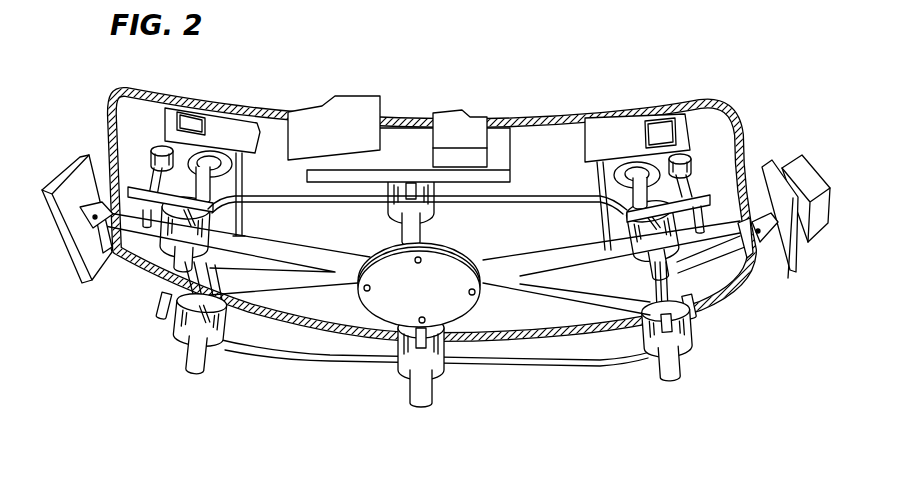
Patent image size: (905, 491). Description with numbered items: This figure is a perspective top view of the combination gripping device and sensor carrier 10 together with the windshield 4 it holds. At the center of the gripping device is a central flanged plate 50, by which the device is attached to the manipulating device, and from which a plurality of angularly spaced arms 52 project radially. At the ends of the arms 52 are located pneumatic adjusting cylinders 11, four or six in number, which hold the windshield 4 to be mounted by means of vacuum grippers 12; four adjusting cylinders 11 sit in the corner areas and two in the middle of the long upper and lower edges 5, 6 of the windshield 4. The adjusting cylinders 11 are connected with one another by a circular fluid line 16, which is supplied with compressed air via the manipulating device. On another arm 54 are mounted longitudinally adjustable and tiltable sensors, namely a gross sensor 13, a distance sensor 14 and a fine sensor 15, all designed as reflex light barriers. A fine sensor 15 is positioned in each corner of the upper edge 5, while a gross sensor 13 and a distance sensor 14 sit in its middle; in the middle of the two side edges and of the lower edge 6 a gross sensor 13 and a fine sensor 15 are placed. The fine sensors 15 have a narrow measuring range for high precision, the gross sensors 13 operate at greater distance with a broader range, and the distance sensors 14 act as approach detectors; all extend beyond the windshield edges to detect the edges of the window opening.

The windshield 4 is at (558, 133).
The upper edge 5 is at (428, 100).
The lower edge 6 is at (463, 342).
The combination gripping device and sensor carrier 10 is at (490, 297).
The pneumatic adjusting cylinders 11 is at (403, 188).
The vacuum grippers 12 is at (216, 157).
The gross sensor 13 is at (307, 110).
The distance sensor 14 is at (452, 120).
The fine sensor 15 is at (190, 117).
The circular fluid line 16 is at (560, 360).
The central flanged plate 50 is at (433, 302).
The arms 52 is at (540, 262).
The other arm 54 is at (505, 168).